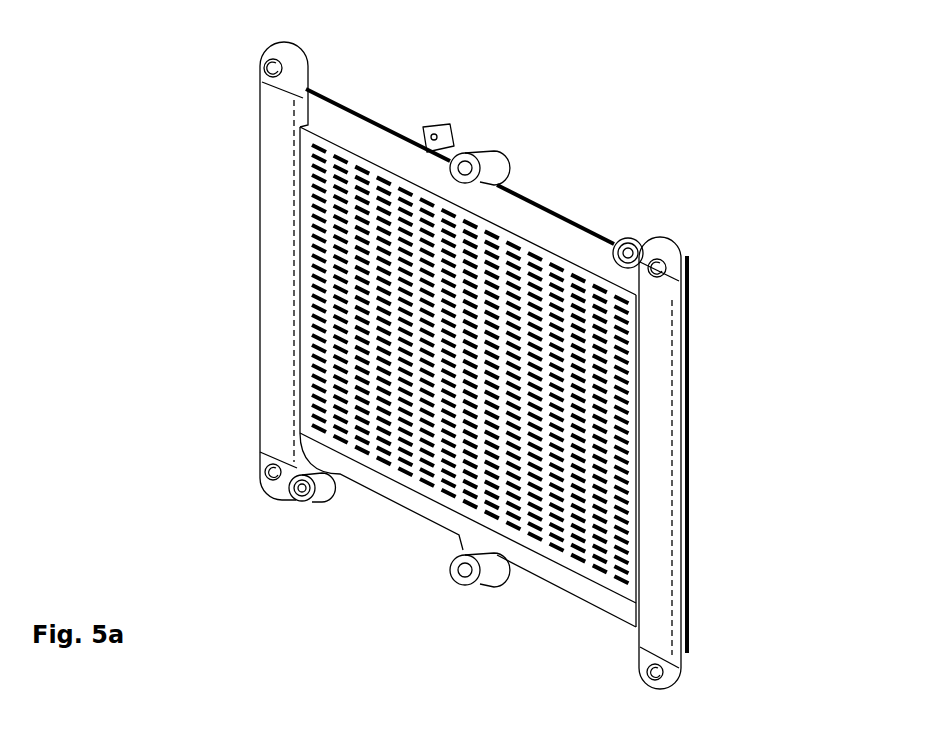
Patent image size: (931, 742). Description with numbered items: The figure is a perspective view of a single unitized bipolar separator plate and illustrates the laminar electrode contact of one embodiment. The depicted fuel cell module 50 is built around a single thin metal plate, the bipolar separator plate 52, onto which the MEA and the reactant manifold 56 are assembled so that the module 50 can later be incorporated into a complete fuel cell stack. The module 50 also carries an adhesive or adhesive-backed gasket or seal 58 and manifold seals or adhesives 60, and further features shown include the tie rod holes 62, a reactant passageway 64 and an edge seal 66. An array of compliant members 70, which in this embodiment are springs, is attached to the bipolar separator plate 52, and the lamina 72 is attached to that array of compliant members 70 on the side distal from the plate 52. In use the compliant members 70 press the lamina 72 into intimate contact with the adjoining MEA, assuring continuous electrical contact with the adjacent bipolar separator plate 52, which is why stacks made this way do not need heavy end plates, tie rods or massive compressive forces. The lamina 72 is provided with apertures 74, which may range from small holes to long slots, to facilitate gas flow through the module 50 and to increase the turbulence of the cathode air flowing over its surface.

The fuel cell module 50 is at (122, 427).
The bipolar separator plate 52 is at (381, 150).
The reactant manifold 56 is at (265, 157).
The gasket or seal 58 is at (348, 108).
The manifold seal 60 is at (687, 261).
The tie rod hole 62 is at (267, 68).
The reactant passageway 64 is at (629, 247).
The edge seal 66 is at (693, 558).
The compliant member 70 is at (552, 252).
The lamina 72 is at (502, 247).
The aperture 74 is at (362, 250).